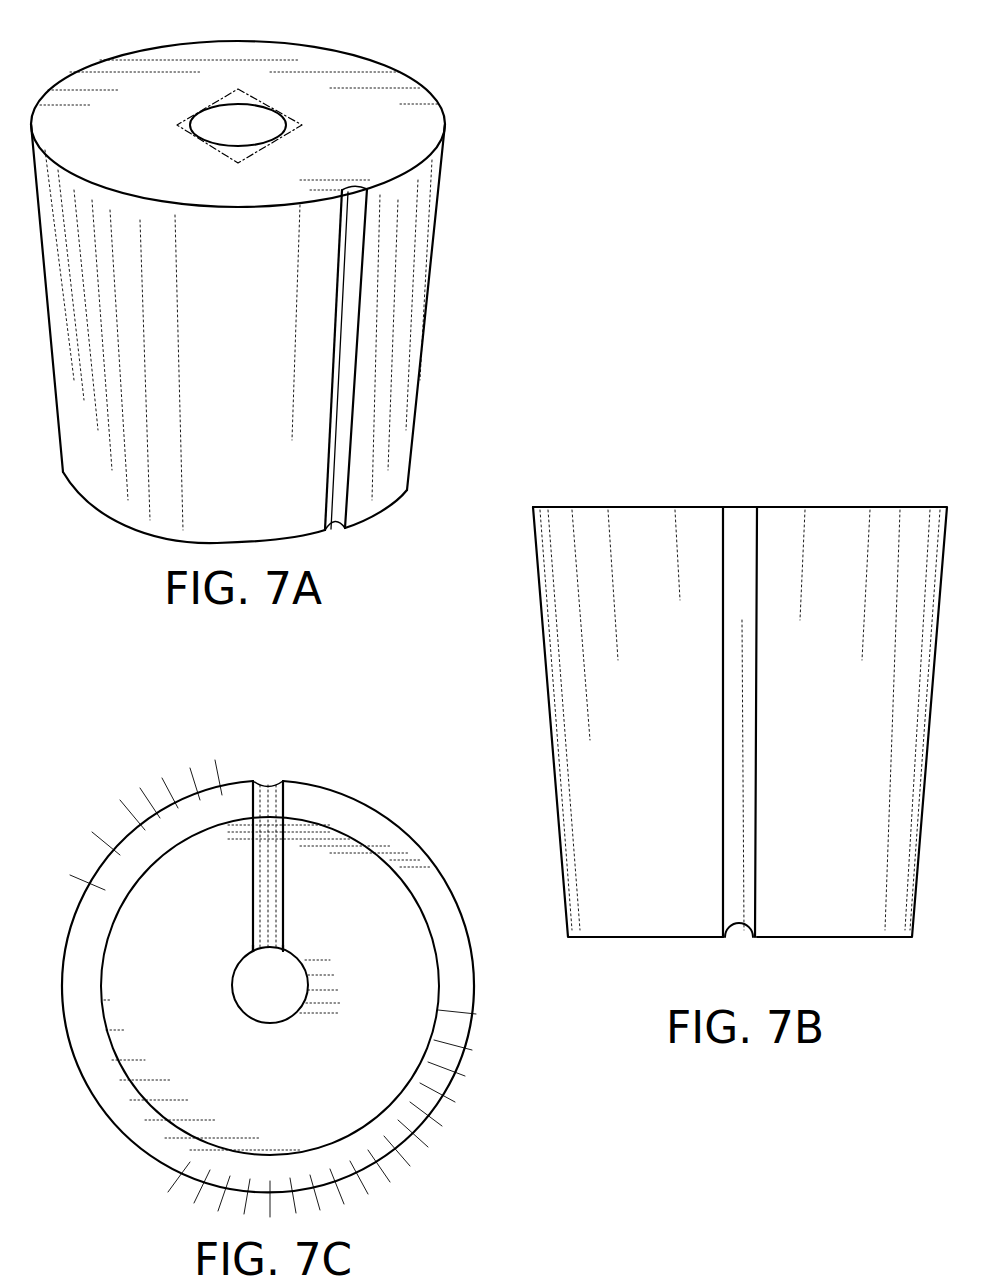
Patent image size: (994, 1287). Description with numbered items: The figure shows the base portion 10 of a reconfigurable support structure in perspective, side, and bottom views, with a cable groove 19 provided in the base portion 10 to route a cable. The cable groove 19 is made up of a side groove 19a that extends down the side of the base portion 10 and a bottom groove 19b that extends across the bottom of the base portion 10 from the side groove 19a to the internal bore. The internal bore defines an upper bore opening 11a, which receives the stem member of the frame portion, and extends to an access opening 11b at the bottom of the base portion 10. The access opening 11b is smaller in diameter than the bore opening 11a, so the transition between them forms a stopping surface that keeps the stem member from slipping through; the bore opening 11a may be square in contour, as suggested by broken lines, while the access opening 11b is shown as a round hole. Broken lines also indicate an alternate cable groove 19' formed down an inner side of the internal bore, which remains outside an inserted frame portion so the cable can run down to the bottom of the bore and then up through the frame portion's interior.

In FIG. 7A, the base portion 10 is at (515, 210).
In FIG. 7B, the base portion 10 is at (538, 697).
In FIG. 7C, the base portion 10 is at (485, 1118).
In FIG. 7A, the bore opening 11a is at (268, 107).
In FIG. 7C, the access opening 11b is at (308, 983).
In FIG. 7A, the cable groove 19 is at (413, 358).
In FIG. 7A, the alternate cable groove 19' is at (293, 126).
In FIG. 7B, the side groove 19a is at (737, 735).
In FIG. 7C, the side groove 19a is at (272, 786).
In FIG. 7B, the bottom groove 19b is at (740, 933).
In FIG. 7C, the bottom groove 19b is at (273, 872).